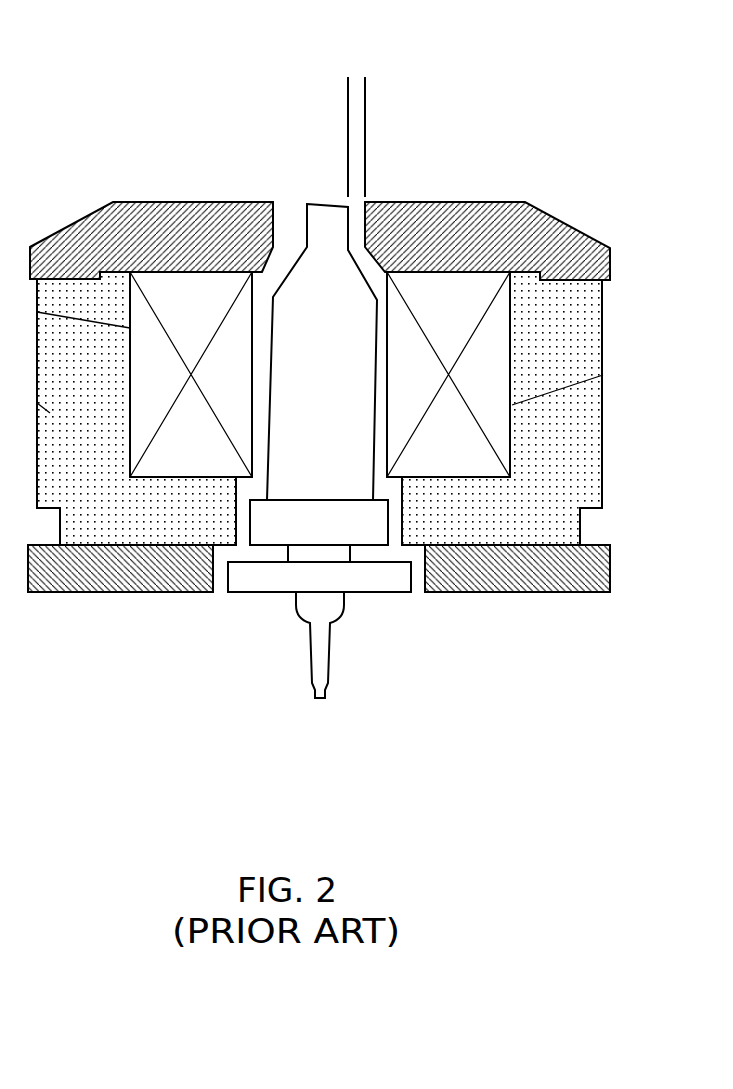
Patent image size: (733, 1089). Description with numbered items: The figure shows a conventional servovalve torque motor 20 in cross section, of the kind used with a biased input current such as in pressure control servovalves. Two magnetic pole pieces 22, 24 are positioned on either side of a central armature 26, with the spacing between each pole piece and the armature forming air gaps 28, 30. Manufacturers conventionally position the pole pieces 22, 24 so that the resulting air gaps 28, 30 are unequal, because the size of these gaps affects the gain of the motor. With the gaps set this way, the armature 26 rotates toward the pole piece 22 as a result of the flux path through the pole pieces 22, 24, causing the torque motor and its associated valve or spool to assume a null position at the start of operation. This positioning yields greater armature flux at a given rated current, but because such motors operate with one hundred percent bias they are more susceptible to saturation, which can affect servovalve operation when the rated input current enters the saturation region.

The servovalve torque motor 20 is at (483, 103).
The magnetic pole piece 22 is at (466, 220).
The magnetic pole piece 24 is at (128, 222).
The armature 26 is at (315, 223).
The air gap 28 is at (318, 89).
The air gap 30 is at (307, 218).